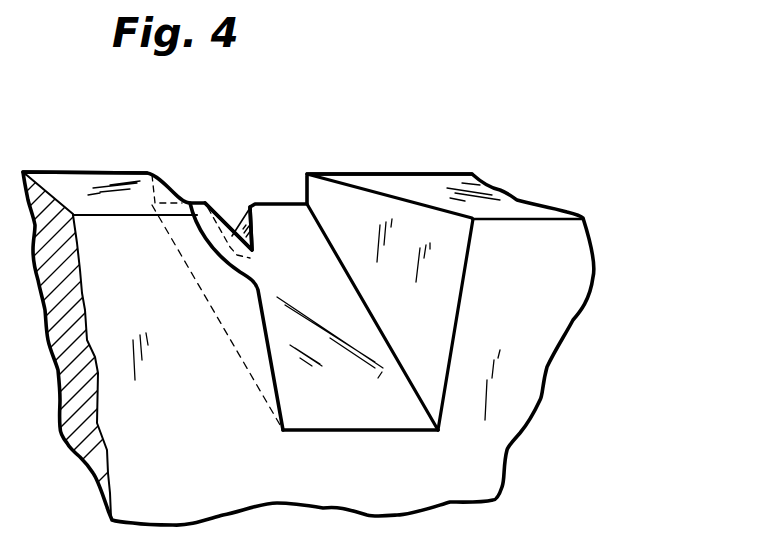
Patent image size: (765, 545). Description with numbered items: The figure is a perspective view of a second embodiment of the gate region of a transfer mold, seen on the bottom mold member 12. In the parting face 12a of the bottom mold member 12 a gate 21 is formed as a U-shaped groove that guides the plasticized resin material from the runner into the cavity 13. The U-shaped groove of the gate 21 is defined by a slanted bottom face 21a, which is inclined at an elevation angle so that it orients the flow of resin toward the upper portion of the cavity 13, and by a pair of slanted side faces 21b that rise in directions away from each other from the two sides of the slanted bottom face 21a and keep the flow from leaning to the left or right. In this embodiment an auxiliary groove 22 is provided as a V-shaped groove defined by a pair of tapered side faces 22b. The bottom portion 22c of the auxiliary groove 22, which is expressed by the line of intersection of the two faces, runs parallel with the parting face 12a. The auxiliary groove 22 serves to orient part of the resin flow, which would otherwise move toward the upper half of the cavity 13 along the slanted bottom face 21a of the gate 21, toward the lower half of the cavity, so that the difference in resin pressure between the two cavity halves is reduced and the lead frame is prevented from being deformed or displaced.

The bottom mold member 12 is at (594, 234).
The parting face 12a is at (512, 202).
The cavity 13 is at (446, 46).
The gate 21 is at (366, 437).
The slanted bottom face 21a is at (330, 308).
The slanted side faces 21b is at (268, 350).
The auxiliary groove 22 is at (276, 138).
The tapered side faces 22b is at (230, 243).
The bottom portion 22c is at (250, 258).